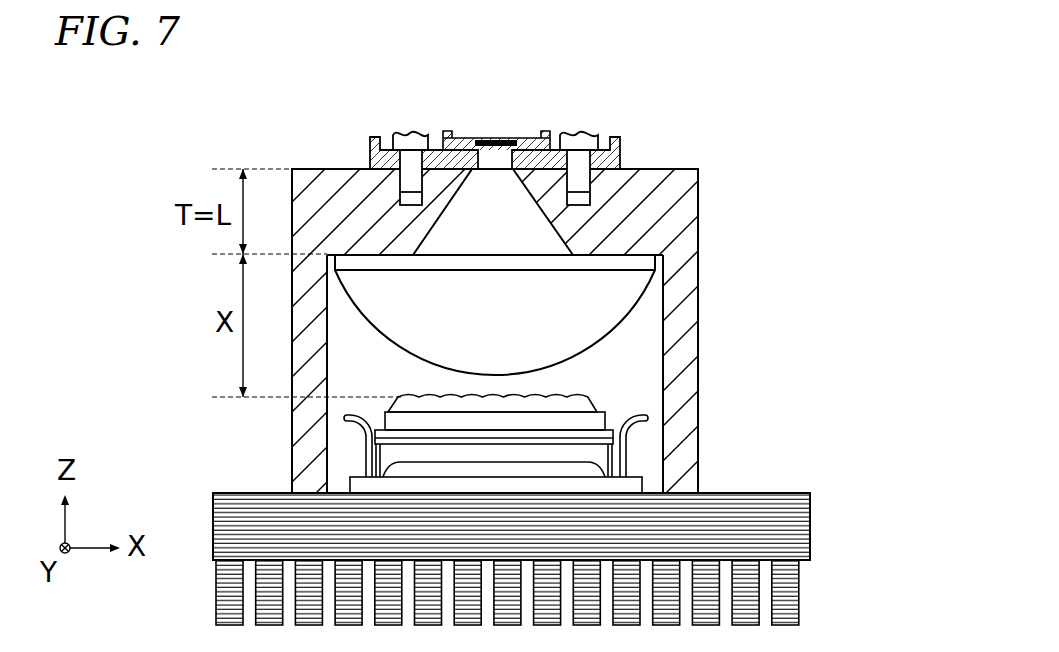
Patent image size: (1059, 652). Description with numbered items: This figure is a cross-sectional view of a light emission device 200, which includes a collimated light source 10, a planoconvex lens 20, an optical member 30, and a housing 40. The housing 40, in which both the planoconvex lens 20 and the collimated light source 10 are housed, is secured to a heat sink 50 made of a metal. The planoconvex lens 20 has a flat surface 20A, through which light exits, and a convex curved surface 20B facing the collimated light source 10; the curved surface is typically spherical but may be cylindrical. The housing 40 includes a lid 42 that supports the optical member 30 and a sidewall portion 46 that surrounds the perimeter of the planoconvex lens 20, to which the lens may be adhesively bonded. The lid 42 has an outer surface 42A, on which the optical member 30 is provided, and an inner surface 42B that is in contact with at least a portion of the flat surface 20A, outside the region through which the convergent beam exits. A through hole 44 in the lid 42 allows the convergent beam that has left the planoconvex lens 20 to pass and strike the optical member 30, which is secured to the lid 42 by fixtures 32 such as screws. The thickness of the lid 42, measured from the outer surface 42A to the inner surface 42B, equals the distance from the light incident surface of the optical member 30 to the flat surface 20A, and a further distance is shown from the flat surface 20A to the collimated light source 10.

The light emission device 200 is at (776, 170).
The heat sink 50 is at (735, 493).
The housing 40 is at (797, 200).
The lid 42 is at (690, 217).
The sidewall portion 46 is at (698, 303).
The outer surface 42A is at (675, 166).
The inner surface 42B is at (603, 260).
The through hole 44 is at (487, 162).
The optical member 30 is at (510, 142).
The fixtures 32 is at (413, 140).
The planoconvex lens 20 is at (518, 316).
The flat surface 20A is at (468, 250).
The convex curved surface 20B is at (358, 318).
The collimated light source 10 is at (590, 401).